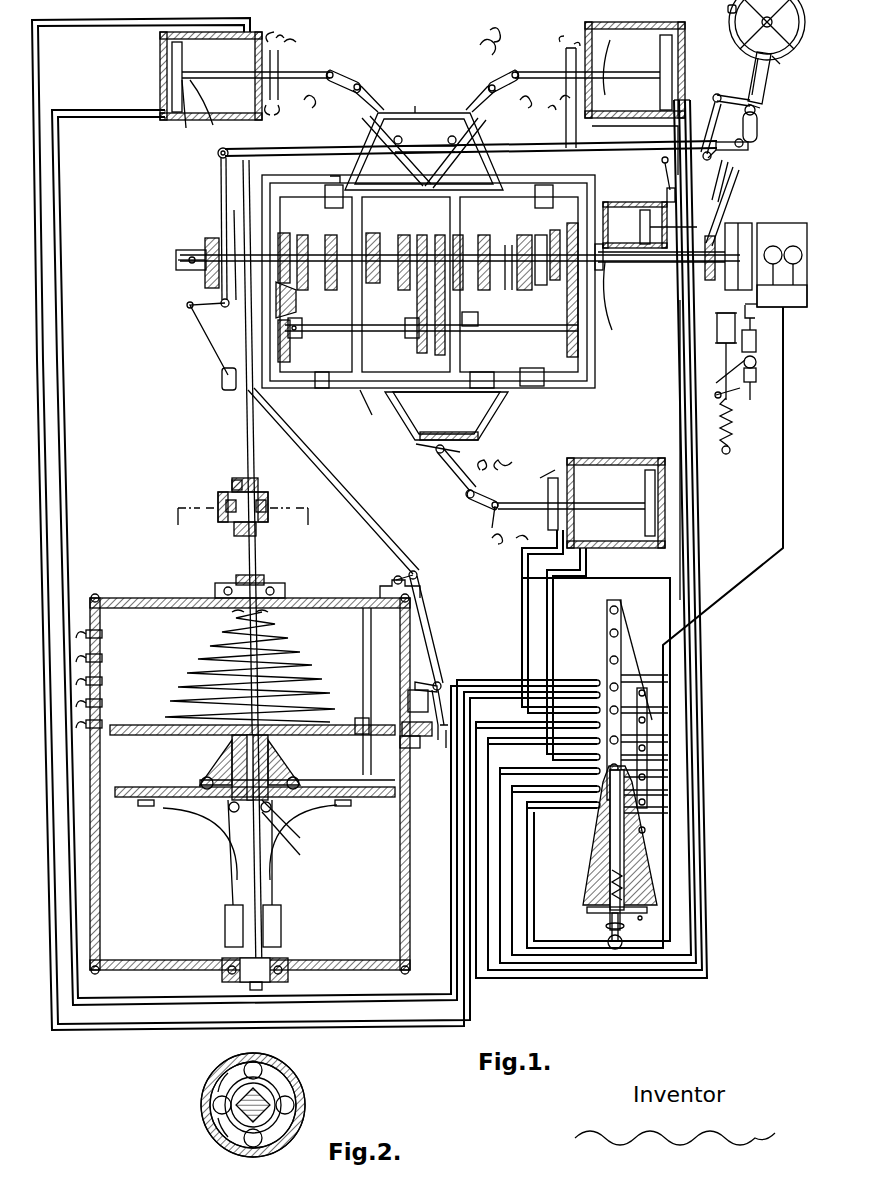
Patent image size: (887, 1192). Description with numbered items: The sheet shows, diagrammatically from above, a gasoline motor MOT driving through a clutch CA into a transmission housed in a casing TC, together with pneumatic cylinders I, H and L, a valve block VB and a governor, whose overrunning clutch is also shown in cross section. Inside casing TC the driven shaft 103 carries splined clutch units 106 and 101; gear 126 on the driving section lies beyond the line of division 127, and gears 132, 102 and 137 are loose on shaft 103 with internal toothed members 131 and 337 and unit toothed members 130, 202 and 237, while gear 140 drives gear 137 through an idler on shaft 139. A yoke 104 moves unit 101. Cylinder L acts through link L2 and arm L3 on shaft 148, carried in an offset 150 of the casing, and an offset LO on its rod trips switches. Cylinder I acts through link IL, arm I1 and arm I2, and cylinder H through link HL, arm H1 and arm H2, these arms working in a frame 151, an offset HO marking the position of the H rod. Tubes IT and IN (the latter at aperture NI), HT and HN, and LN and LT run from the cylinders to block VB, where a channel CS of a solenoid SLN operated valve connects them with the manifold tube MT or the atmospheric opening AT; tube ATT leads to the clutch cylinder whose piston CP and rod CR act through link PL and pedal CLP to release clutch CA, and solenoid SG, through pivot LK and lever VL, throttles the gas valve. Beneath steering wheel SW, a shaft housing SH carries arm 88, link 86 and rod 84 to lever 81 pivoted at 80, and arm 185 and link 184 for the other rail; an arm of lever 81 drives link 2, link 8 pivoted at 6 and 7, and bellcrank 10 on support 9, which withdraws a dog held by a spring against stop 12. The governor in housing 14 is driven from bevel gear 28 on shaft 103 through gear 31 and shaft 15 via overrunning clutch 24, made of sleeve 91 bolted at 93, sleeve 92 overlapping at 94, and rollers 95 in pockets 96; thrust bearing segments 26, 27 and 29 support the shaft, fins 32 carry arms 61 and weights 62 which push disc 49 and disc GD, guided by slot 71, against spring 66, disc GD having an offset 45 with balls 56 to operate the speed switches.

In FIG. 1, the pneumatic cylinder I is at (229, 78).
In FIG. 1, the pneumatic cylinder H is at (600, 88).
In FIG. 1, the pneumatic cylinder L is at (605, 470).
In FIG. 1, the tube IT is at (34, 80).
In FIG. 1, the tube IN is at (66, 486).
In FIG. 1, the aperture NI is at (160, 110).
In FIG. 1, the tube LN is at (522, 594).
In FIG. 1, the tube LT is at (547, 618).
In FIG. 1, the tube HT is at (520, 740).
In FIG. 1, the tube HN is at (540, 720).
In FIG. 1, the tube MT is at (783, 478).
In FIG. 1, the tube ATT is at (676, 380).
In FIG. 1, the transmission casing TC is at (290, 392).
In FIG. 1, the steering wheel SW is at (729, 25).
In FIG. 1, the steering wheel shaft housing SH is at (764, 78).
In FIG. 1, the gasoline motor MOT is at (784, 223).
In FIG. 1, the clutch CA is at (742, 224).
In FIG. 1, the piston CP is at (644, 258).
In FIG. 1, the rod CR is at (680, 270).
In FIG. 1, the link PL is at (716, 232).
In FIG. 1, the valve block VB is at (672, 890).
In FIG. 1, the circular channel CS is at (652, 806).
In FIG. 1, the opening to atmosphere AT is at (670, 850).
In FIG. 1, the solenoid SLN is at (623, 940).
In FIG. 1, the governor housing 14 is at (102, 868).
In FIG. 1, the shaft 15 is at (242, 431).
In FIG. 2, the shaft 15 is at (215, 1122).
In FIG. 1, the spring 66 is at (290, 662).
In FIG. 1, the weight 62 is at (281, 926).
In FIG. 1, the overrunning clutch 24 is at (268, 500).
In FIG. 2, the overrunning clutch 24 is at (280, 1095).
In FIG. 1, the link 2 is at (356, 490).
In FIG. 1, the rod 84 is at (471, 157).
In FIG. 1, the frame 151 is at (416, 151).
In FIG. 1, the lever 81 is at (218, 212).
In FIG. 1, the gear 31 is at (252, 566).
In FIG. 1, the bevel gear 28 is at (207, 255).
In FIG. 1, the driven shaft 103 is at (178, 271).
In FIG. 1, the pivot 80 is at (212, 318).
In FIG. 1, the clutch unit 101 is at (460, 244).
In FIG. 1, the yoke 104 is at (360, 340).
In FIG. 1, the gear 137 is at (284, 232).
In FIG. 1, the internal toothed member 337 is at (303, 234).
In FIG. 1, the external toothed member 237 is at (331, 234).
In FIG. 1, the external toothed member 202 is at (398, 245).
In FIG. 1, the gear 102 is at (412, 279).
In FIG. 1, the gear 132 is at (440, 234).
In FIG. 1, the internal toothed member 131 is at (460, 290).
In FIG. 1, the external toothed member 130 is at (486, 290).
In FIG. 1, the clutch unit 106 is at (521, 249).
In FIG. 1, the line of division 127 is at (554, 230).
In FIG. 1, the gear 126 is at (572, 223).
In FIG. 1, the gear 140 is at (290, 350).
In FIG. 1, the shaft 139 is at (296, 300).
In FIG. 1, the offset 150 is at (446, 416).
In FIG. 1, the shaft 148 is at (466, 436).
In FIG. 1, the offset LO is at (548, 490).
In FIG. 1, the link L2 is at (480, 507).
In FIG. 1, the arm L3 is at (446, 466).
In FIG. 1, the thrust bearing segment 27 is at (215, 594).
In FIG. 1, the thrust bearing segment 26 is at (266, 584).
In FIG. 1, the disc GD is at (160, 735).
In FIG. 1, the arm 61 is at (255, 807).
In FIG. 1, the offset 45 is at (290, 765).
In FIG. 1, the disc 49 is at (265, 764).
In FIG. 1, the balls 56 is at (202, 780).
In FIG. 1, the fin 32 is at (267, 852).
In FIG. 1, the thrust bearing segment 29 is at (222, 956).
In FIG. 1, the slot 71 is at (371, 640).
In FIG. 1, the link IL is at (360, 80).
In FIG. 1, the link HL is at (499, 95).
In FIG. 1, the arm I1 is at (376, 100).
In FIG. 1, the arm H1 is at (480, 110).
In FIG. 1, the arm I2 is at (396, 151).
In FIG. 1, the arm H2 is at (455, 153).
In FIG. 1, the offset HO is at (564, 53).
In FIG. 1, the link 8 is at (424, 603).
In FIG. 1, the pivot 6 is at (418, 575).
In FIG. 1, the pivot 7 is at (442, 682).
In FIG. 1, the support 9 is at (426, 680).
In FIG. 1, the bellcrank 10 is at (428, 707).
In FIG. 1, the spring stop 12 is at (417, 757).
In FIG. 1, the arm 185 is at (718, 92).
In FIG. 1, the link 184 is at (712, 130).
In FIG. 1, the arm 88 is at (758, 125).
In FIG. 1, the link 86 is at (750, 150).
In FIG. 1, the pedal CLP is at (728, 176).
In FIG. 1, the solenoid SG is at (722, 312).
In FIG. 1, the pivot connection LK is at (756, 364).
In FIG. 1, the lever VL is at (733, 422).
In FIG. 1, the sleeve 91 is at (260, 488).
In FIG. 2, the sleeve 91 is at (284, 1106).
In FIG. 1, the sleeve 92 is at (256, 530).
In FIG. 2, the sleeve 92 is at (278, 1118).
In FIG. 1, the bolt 93 is at (232, 482).
In FIG. 1, the overlap 94 is at (226, 520).
In FIG. 2, the overlap 94 is at (290, 1078).
In FIG. 1, the roller 95 is at (268, 512).
In FIG. 2, the roller 95 is at (212, 1106).
In FIG. 2, the pocket 96 is at (222, 1078).